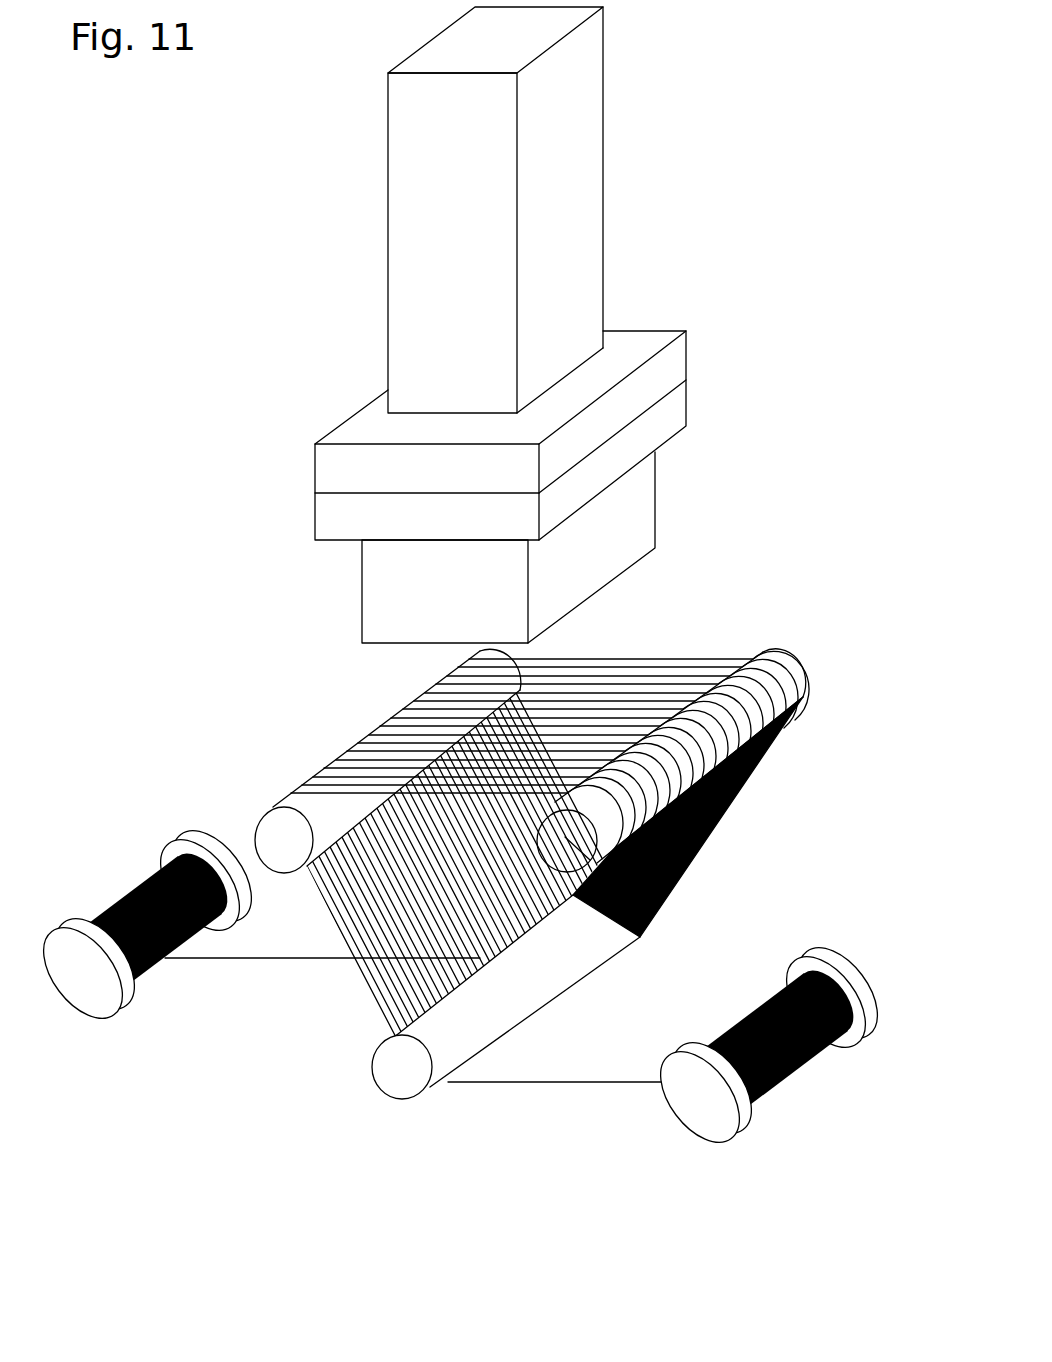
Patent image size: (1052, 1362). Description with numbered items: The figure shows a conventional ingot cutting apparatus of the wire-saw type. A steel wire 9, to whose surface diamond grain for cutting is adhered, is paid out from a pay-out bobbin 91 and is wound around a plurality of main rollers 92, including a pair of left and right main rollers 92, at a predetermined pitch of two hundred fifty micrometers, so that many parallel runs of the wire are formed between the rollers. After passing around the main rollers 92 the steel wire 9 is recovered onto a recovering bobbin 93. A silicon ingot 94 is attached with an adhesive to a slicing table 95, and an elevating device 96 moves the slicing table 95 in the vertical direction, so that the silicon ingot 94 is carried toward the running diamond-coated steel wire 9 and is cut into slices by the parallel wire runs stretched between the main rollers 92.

The steel wire 9 is at (740, 790).
The pay-out bobbin 91 is at (697, 1097).
The main rollers 92 is at (290, 835).
The recovering bobbin 93 is at (83, 983).
The silicon ingot 94 is at (428, 587).
The slicing table 95 is at (648, 432).
The elevating device 96 is at (580, 192).